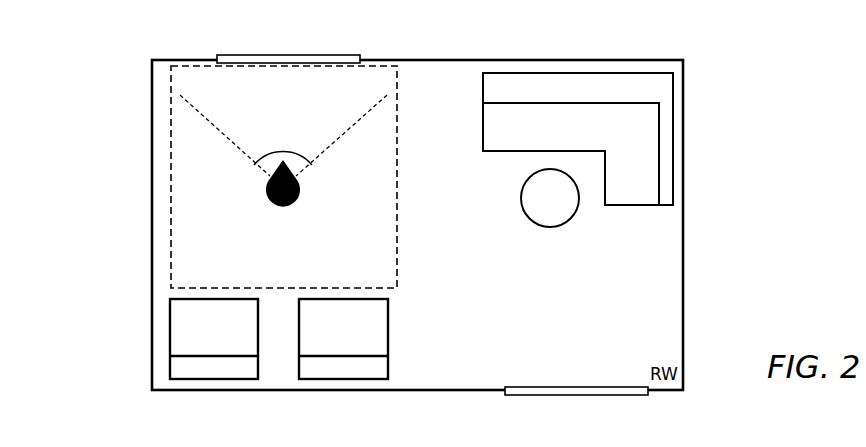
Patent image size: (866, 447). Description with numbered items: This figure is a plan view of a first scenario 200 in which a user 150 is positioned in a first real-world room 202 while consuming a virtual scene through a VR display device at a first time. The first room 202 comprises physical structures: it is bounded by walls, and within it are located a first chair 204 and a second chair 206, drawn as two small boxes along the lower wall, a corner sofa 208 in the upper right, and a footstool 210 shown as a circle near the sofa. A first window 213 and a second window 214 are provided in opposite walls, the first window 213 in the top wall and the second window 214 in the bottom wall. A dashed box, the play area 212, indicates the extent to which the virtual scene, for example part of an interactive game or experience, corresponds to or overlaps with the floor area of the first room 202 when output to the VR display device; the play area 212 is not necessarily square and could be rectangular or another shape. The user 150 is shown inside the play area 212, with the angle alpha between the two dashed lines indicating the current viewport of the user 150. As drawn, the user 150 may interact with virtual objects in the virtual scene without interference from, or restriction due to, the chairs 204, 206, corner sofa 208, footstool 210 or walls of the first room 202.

The first scenario 200 is at (119, 65).
The first real-world room 202 is at (152, 237).
The first chair 204 is at (199, 343).
The second chair 206 is at (328, 343).
The corner sofa 208 is at (603, 135).
The footstool 210 is at (533, 206).
The play area 212 is at (392, 281).
The first window 213 is at (243, 58).
The second window 214 is at (578, 390).
The user 150 is at (272, 203).